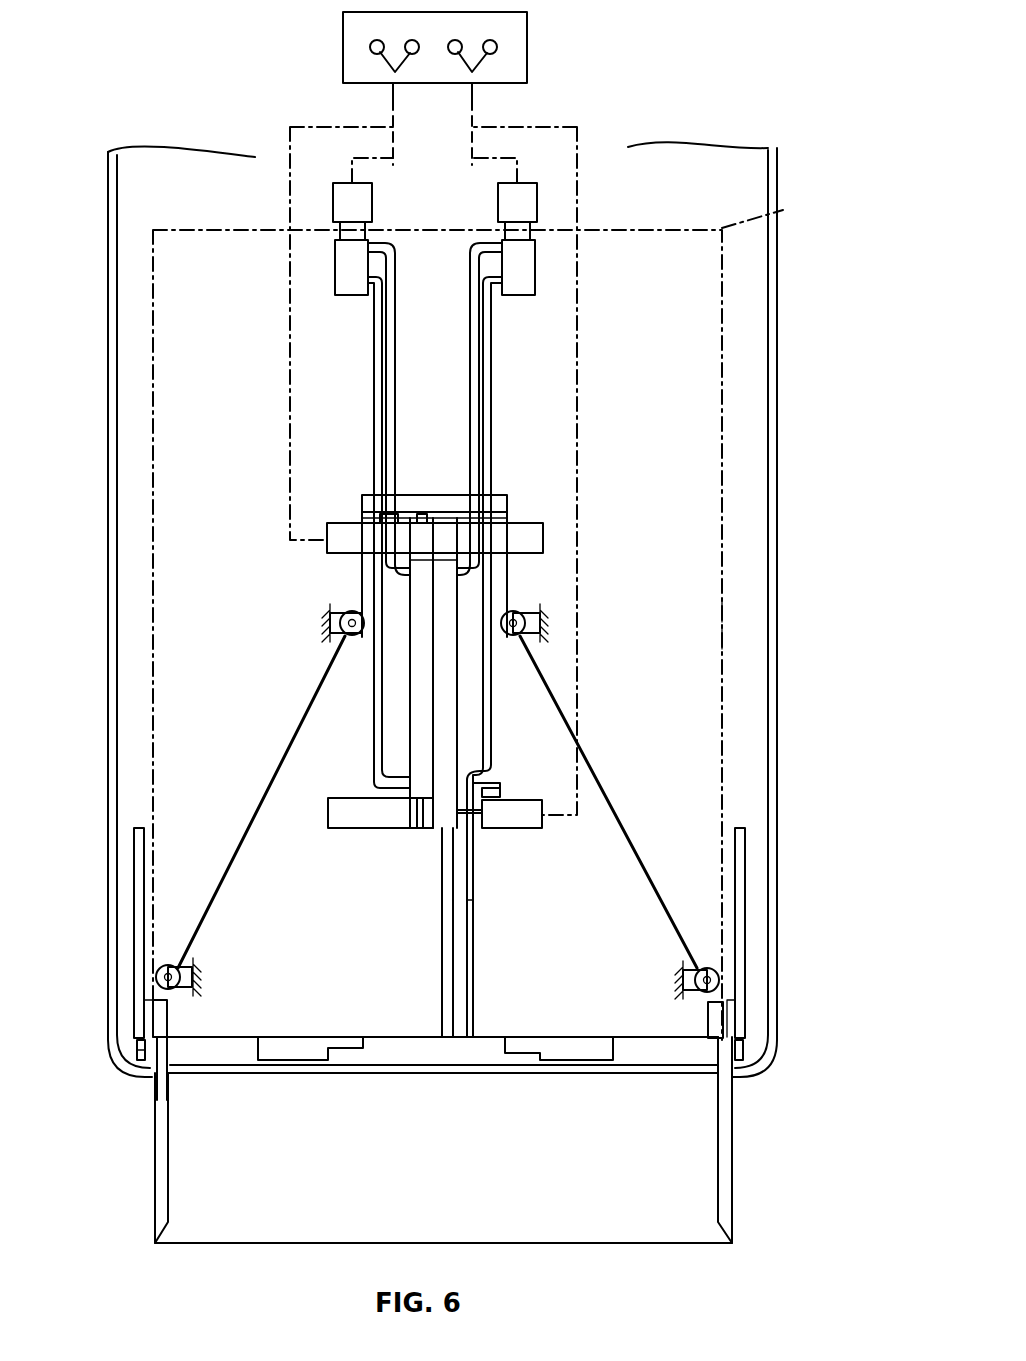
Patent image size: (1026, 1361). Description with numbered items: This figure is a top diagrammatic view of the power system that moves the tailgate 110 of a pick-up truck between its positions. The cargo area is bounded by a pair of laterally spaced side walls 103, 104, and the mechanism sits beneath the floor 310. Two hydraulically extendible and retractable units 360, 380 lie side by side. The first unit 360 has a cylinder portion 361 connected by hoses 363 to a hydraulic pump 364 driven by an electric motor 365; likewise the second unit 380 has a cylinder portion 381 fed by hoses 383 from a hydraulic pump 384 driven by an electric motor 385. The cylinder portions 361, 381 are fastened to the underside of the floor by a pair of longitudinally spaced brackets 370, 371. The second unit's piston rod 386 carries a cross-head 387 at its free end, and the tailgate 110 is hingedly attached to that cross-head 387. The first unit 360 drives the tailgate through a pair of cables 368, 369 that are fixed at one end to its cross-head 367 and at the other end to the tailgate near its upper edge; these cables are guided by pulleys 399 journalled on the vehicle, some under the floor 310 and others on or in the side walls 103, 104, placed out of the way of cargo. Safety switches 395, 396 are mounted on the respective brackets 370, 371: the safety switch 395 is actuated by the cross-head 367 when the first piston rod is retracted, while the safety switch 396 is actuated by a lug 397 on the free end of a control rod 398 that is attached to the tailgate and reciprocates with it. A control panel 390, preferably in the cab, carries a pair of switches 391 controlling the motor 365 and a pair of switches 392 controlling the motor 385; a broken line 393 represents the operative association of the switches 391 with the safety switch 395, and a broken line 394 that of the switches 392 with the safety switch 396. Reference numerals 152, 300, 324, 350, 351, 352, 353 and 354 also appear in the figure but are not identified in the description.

The side wall 103 is at (148, 728).
The side wall 104 is at (735, 625).
The tailgate 110 is at (646, 1158).
The compartment 152 is at (783, 210).
The actuator assembly 300 is at (555, 548).
The floor 310 is at (193, 790).
The base plate 324 is at (222, 1043).
The support 350 is at (748, 1025).
The fastener 351 is at (128, 1057).
The strut 352 is at (747, 878).
The guide rail 353 is at (745, 840).
The bracket 354 is at (742, 1050).
The first hydraulically extendible and retractable unit 360 is at (410, 737).
The cylinder portion 361 is at (415, 700).
The hoses 363 is at (382, 395).
The hydraulic pump 364 is at (340, 275).
The electric motor 365 is at (340, 200).
The cross-head 367 is at (505, 493).
The cable 368 is at (378, 690).
The cable 369 is at (625, 838).
The bracket 370 is at (543, 522).
The bracket 371 is at (363, 828).
The second hydraulically extendible and retractable unit 380 is at (458, 741).
The cylinder portion 381 is at (452, 668).
The hoses 383 is at (490, 430).
The hydraulic pump 384 is at (530, 275).
The electric motor 385 is at (525, 197).
The piston rod 386 is at (443, 950).
The cross-head 387 is at (395, 1043).
The control panel 390 is at (528, 63).
The pair of switches 391 is at (395, 47).
The pair of switches 392 is at (458, 40).
The broken line 393 is at (290, 116).
The broken line 394 is at (580, 120).
The safety switch 395 is at (385, 520).
The safety switch 396 is at (520, 830).
The lug 397 is at (500, 782).
The control rod 398 is at (478, 955).
The pulleys 399 is at (530, 618).